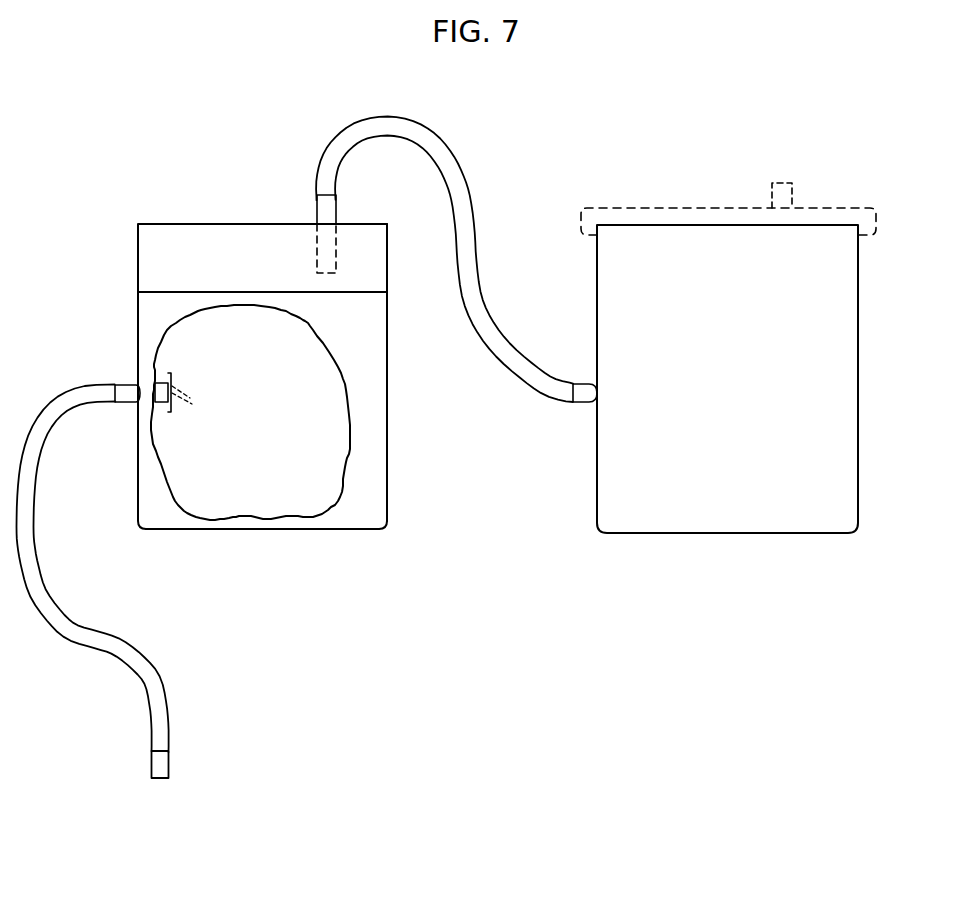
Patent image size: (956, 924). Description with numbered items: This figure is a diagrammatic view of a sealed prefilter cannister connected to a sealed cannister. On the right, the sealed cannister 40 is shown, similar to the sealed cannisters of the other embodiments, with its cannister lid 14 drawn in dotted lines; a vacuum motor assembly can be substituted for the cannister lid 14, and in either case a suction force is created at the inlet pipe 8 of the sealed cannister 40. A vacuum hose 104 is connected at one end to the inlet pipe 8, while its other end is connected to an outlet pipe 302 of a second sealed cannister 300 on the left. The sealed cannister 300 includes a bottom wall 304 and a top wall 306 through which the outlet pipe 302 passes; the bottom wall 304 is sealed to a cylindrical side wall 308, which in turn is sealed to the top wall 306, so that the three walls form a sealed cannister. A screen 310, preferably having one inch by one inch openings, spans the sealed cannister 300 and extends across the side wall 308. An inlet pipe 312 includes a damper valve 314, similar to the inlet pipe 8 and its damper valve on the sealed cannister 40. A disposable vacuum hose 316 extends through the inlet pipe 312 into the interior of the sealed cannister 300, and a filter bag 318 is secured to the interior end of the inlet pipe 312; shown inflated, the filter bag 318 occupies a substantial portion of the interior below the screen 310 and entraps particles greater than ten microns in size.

The second sealed cannister 300 is at (264, 377).
The outlet pipe 302 is at (322, 211).
The bottom wall 304 is at (269, 533).
The top wall 306 is at (188, 223).
The cylindrical side wall 308 is at (388, 410).
The screen 310 is at (170, 290).
The inlet pipe 312 is at (128, 385).
The damper valve 314 is at (169, 404).
The disposable vacuum hose 316 is at (143, 675).
The filter bag 318 is at (338, 500).
The vacuum hose 104 is at (457, 183).
The inlet pipe 8 is at (588, 401).
The sealed cannister 40 is at (822, 402).
The cannister lid 14 is at (793, 183).